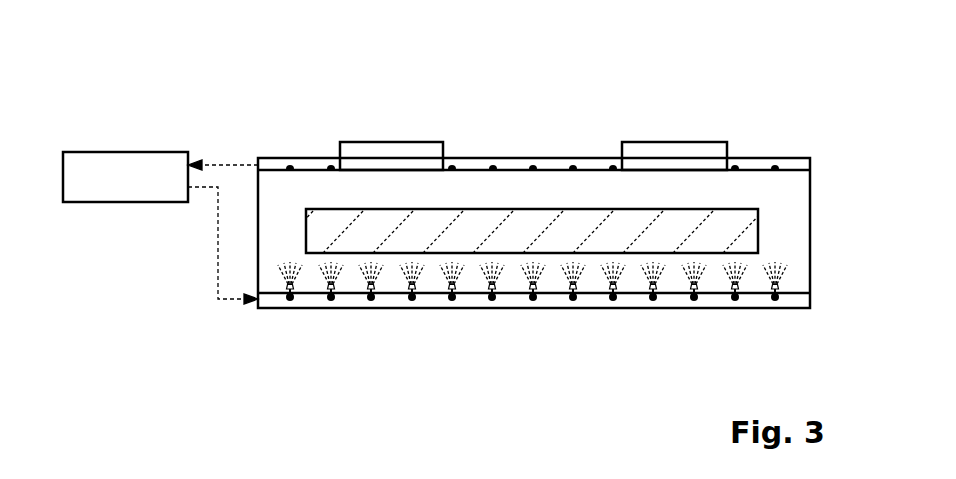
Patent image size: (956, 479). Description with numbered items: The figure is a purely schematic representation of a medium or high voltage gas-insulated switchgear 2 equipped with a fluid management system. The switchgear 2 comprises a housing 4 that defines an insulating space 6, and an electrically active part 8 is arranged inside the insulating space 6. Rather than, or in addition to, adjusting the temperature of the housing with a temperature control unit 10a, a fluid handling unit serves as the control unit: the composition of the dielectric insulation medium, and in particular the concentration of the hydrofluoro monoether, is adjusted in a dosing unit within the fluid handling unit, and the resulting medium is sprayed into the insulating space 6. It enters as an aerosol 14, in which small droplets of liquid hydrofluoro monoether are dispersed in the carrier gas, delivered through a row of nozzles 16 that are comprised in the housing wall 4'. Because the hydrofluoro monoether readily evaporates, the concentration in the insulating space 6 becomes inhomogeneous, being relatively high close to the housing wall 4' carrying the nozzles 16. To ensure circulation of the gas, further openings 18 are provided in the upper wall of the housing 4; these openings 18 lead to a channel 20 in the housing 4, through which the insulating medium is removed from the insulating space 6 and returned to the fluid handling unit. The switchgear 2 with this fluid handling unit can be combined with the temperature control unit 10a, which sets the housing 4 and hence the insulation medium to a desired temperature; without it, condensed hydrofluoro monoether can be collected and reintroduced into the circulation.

The switchgear 2 is at (660, 92).
The housing 4 is at (536, 181).
The housing wall 4' is at (534, 341).
The insulating space 6 is at (543, 190).
The electrically active part 8 is at (446, 235).
The temperature control unit 10a is at (127, 150).
The aerosol 14 is at (603, 270).
The nozzles 16 is at (653, 297).
The openings 18 is at (455, 163).
The channel 20 is at (512, 160).